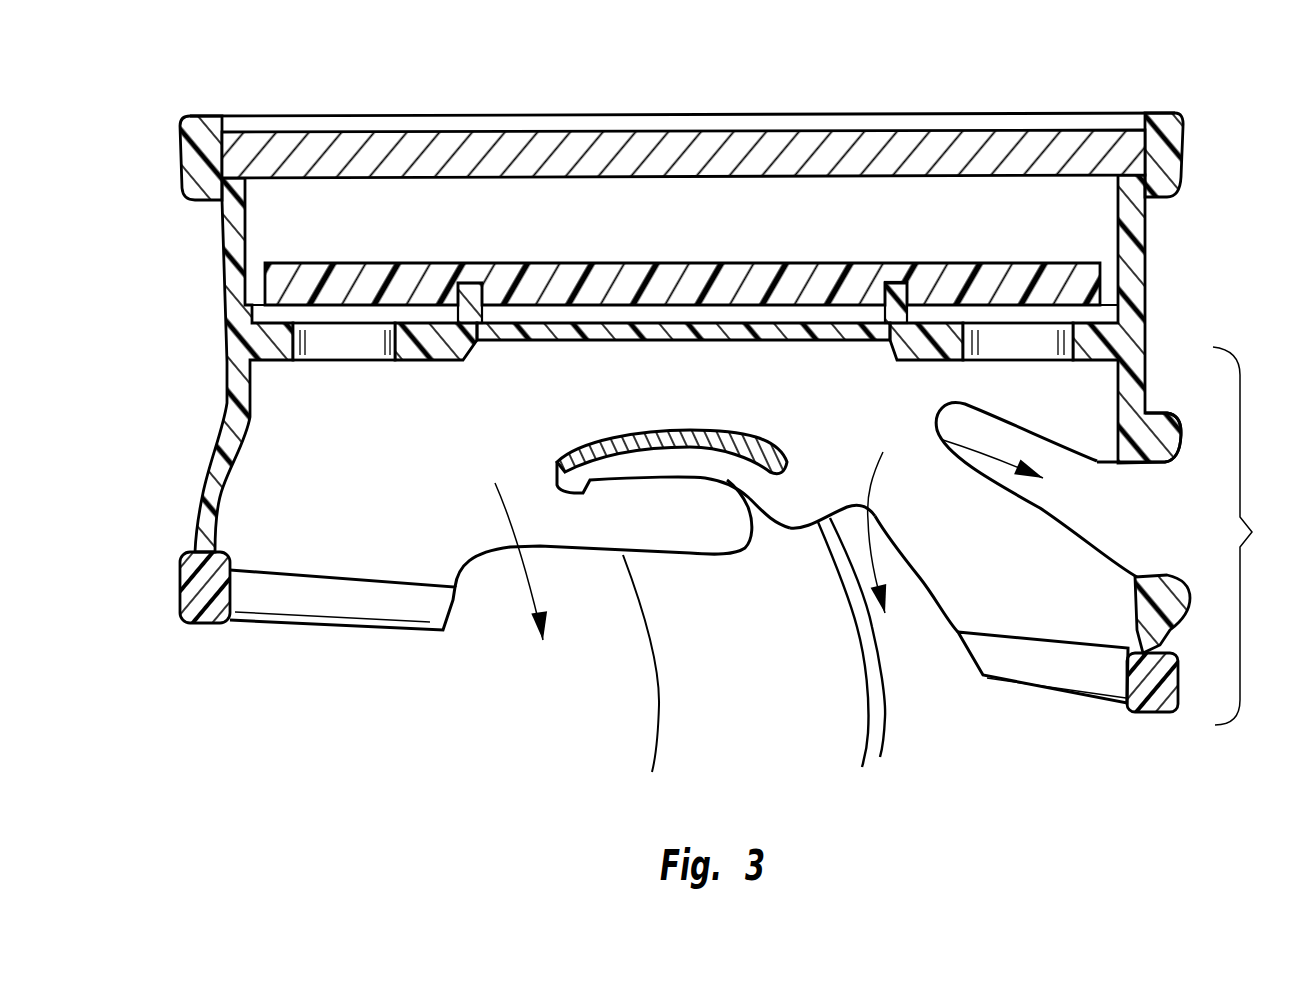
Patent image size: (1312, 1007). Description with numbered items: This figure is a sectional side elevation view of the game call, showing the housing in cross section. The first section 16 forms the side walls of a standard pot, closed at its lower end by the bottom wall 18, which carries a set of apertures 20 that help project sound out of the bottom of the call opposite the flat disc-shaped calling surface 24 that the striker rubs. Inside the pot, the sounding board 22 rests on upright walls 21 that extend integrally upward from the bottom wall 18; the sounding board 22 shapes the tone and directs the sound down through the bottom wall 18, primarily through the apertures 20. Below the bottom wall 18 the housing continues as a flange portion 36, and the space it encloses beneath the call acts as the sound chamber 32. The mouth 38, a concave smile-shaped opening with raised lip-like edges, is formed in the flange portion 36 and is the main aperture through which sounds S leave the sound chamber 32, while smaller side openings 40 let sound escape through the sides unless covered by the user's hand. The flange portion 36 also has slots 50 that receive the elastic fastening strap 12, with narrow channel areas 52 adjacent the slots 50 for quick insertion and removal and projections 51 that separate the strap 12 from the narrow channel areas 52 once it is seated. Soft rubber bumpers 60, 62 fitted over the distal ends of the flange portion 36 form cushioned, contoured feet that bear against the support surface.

The fastening strap 12 is at (618, 435).
The first section 16 is at (233, 317).
The bottom wall 18 is at (960, 358).
The apertures 20 is at (343, 353).
The upright walls 21 is at (458, 288).
The sounding board 22 is at (833, 266).
The calling surface 24 is at (600, 143).
The sound chamber 32 is at (860, 432).
The flange portion 36 is at (1251, 536).
The mouth 38 is at (1144, 466).
The side openings 40 is at (927, 593).
The slots 50 is at (553, 460).
The projections 51 is at (740, 455).
The narrow channel areas 52 is at (775, 525).
The bumper 60 is at (1067, 672).
The bumper 62 is at (337, 608).
The sounds S is at (943, 439).